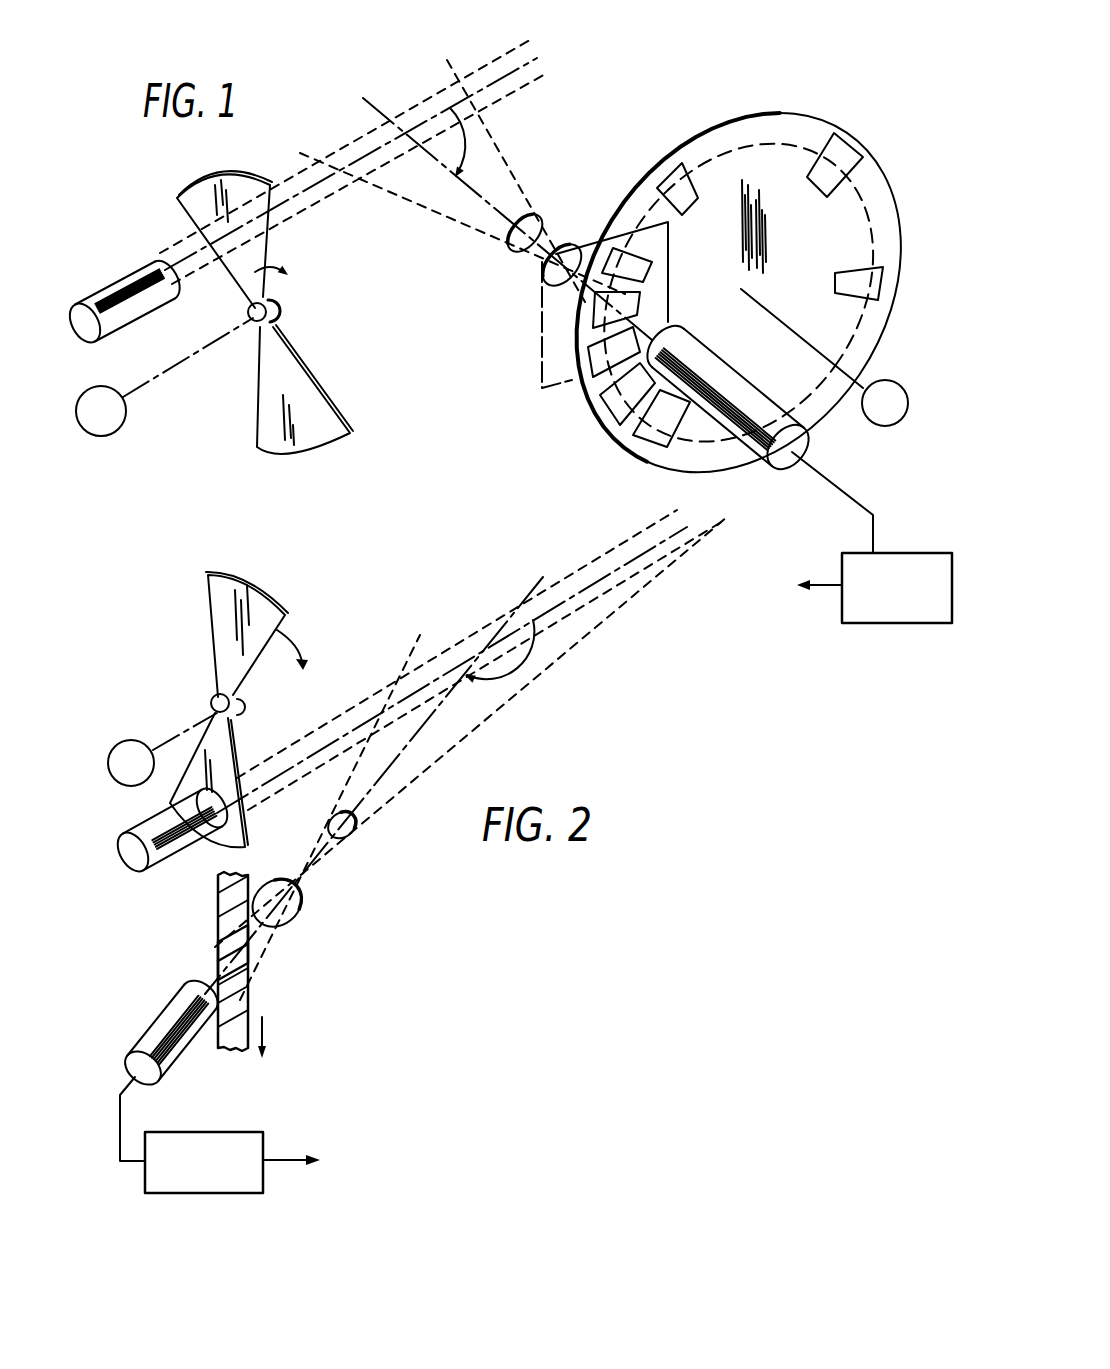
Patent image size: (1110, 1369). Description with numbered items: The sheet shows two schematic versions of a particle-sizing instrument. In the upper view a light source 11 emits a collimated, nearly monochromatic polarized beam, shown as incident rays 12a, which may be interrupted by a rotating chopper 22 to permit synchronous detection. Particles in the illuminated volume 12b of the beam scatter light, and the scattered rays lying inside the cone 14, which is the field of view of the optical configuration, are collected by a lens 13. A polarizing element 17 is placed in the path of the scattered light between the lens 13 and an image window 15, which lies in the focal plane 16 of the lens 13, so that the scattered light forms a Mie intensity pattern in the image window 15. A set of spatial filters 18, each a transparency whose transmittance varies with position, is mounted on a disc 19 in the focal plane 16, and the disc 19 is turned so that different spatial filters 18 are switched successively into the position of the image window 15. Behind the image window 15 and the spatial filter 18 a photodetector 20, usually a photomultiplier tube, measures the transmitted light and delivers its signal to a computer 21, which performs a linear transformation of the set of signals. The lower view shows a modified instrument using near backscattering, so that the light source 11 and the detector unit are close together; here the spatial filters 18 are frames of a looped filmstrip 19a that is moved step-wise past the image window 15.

In FIG. 1, the light source 11 is at (128, 275).
In FIG. 2, the light source 11 is at (130, 830).
In FIG. 1, the incident light beam 12a is at (513, 78).
In FIG. 2, the incident light beam 12a is at (613, 568).
In FIG. 1, the volume of the beam 12b is at (489, 63).
In FIG. 2, the volume of the beam 12b is at (387, 707).
In FIG. 1, the lens 13 is at (512, 252).
In FIG. 2, the lens 13 is at (360, 825).
In FIG. 1, the cone 14 is at (503, 153).
In FIG. 2, the cone 14 is at (483, 730).
In FIG. 1, the image window 15 is at (580, 326).
In FIG. 2, the image window 15 is at (252, 960).
In FIG. 1, the focal plane 16 is at (542, 388).
In FIG. 1, the polarizing element 17 is at (578, 248).
In FIG. 2, the polarizing element 17 is at (302, 906).
In FIG. 1, the spatial filters 18 is at (672, 165).
In FIG. 2, the spatial filters 18 is at (250, 1005).
In FIG. 1, the disc 19 is at (803, 112).
In FIG. 2, the filmstrip 19a is at (218, 896).
In FIG. 1, the photodetector 20 is at (773, 468).
In FIG. 2, the photodetector 20 is at (133, 1056).
In FIG. 1, the computer 21 is at (848, 622).
In FIG. 2, the computer 21 is at (220, 1132).
In FIG. 1, the chopper 22 is at (313, 397).
In FIG. 2, the chopper 22 is at (248, 590).